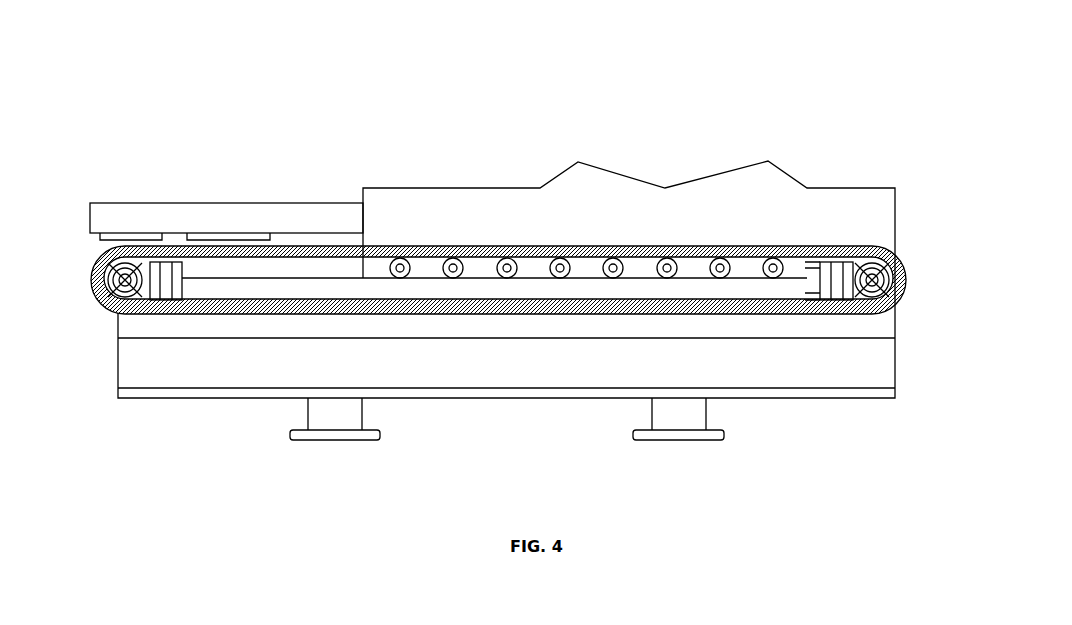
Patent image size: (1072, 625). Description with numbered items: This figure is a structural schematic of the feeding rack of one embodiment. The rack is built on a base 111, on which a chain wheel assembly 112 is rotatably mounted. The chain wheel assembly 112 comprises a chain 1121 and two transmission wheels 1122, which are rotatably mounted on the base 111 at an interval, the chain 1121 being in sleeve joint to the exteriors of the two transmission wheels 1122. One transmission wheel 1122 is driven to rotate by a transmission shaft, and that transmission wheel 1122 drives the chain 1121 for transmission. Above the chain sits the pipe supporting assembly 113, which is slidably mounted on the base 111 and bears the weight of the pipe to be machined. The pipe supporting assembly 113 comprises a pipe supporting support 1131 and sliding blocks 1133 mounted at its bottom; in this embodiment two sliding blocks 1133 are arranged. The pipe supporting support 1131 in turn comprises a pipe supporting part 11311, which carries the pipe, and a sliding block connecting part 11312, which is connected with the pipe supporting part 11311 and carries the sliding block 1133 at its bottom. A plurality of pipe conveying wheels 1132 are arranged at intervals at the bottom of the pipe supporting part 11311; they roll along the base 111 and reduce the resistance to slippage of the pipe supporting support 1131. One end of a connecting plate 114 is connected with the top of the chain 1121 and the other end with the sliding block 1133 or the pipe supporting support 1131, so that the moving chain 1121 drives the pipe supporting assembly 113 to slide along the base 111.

The base 111 is at (877, 372).
The chain wheel assembly 112 is at (978, 222).
The chain 1121 is at (857, 245).
The transmission wheel 1122 is at (877, 278).
The pipe supporting assembly 113 is at (245, 108).
The pipe supporting support 1131 is at (390, 153).
The pipe supporting part 11311 is at (437, 203).
The sliding block connecting part 11312 is at (275, 212).
The pipe conveying wheel 1132 is at (457, 257).
The sliding block 1133 is at (132, 237).
The connecting plate 114 is at (205, 237).